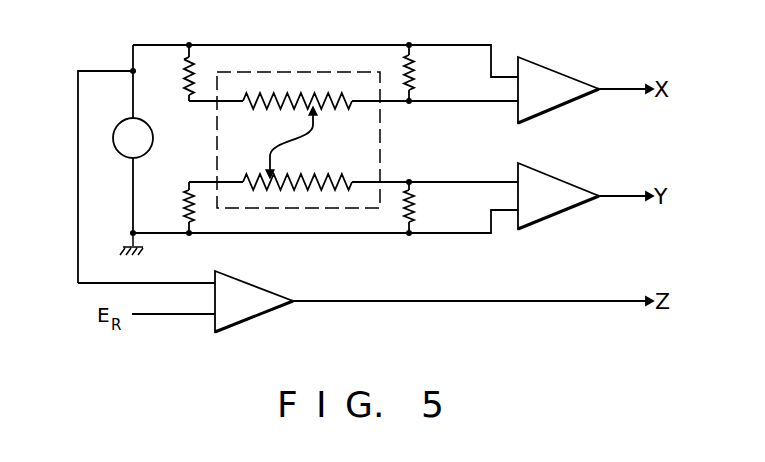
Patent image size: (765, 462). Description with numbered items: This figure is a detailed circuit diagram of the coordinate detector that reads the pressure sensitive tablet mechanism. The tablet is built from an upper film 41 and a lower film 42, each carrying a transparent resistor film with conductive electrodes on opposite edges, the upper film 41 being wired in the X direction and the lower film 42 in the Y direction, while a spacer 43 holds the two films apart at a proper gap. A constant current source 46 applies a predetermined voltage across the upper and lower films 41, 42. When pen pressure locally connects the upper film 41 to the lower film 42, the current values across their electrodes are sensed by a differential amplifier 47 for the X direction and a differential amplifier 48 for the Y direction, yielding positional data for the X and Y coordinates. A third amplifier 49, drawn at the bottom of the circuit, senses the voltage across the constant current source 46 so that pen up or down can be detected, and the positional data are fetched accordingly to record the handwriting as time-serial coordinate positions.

The upper film 41 is at (337, 95).
The lower film 42 is at (340, 190).
The spacer 43 is at (323, 143).
The constant current source 46 is at (147, 124).
The differential amplifier 47 is at (575, 80).
The differential amplifier 48 is at (573, 186).
The amplifier Z output 49 is at (260, 310).